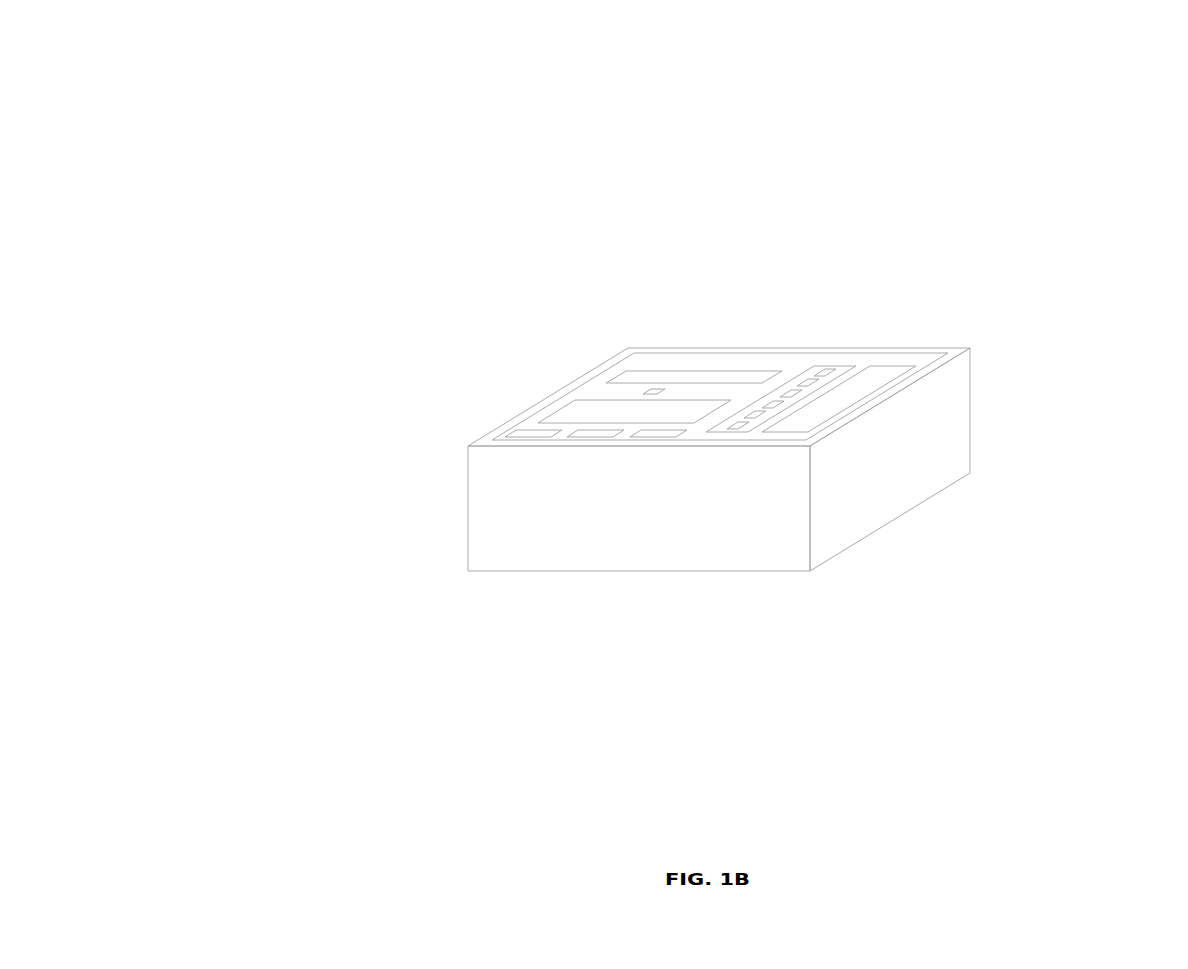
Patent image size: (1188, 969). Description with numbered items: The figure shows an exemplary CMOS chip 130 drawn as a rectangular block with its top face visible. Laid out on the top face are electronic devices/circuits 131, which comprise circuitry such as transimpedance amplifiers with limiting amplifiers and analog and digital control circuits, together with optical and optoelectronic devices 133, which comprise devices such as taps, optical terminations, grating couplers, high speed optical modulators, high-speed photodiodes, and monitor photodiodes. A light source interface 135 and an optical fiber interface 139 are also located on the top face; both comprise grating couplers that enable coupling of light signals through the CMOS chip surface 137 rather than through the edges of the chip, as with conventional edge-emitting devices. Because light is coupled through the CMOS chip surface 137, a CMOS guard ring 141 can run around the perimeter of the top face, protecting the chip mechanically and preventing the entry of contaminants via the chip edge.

The CMOS chip 130 is at (338, 112).
The electronic devices/circuits 131 is at (560, 632).
The optical and optoelectronic devices 133 is at (632, 369).
The light source interface 135 is at (652, 386).
The CMOS chip surface 137 is at (801, 360).
The optical fiber interface 139 is at (829, 364).
The CMOS guard ring 141 is at (963, 372).